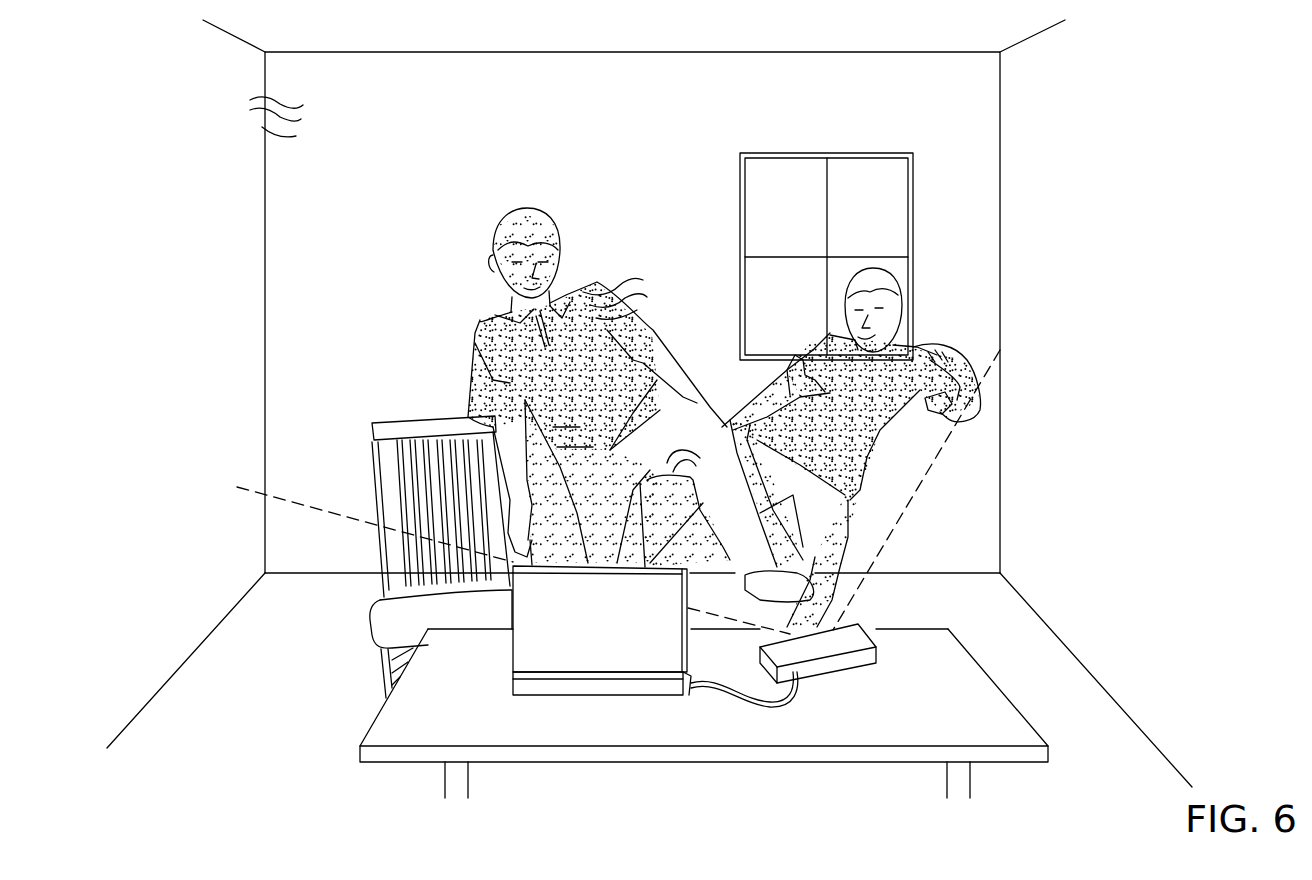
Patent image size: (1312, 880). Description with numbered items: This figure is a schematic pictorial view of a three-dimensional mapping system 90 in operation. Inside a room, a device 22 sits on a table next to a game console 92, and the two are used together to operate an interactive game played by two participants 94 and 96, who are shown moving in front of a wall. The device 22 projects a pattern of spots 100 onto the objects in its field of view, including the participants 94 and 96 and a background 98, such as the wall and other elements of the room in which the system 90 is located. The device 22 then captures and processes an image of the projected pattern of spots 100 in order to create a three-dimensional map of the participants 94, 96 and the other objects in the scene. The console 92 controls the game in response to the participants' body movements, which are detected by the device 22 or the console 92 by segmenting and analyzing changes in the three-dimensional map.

The device 22 is at (872, 638).
The 3D mapping system 90 is at (215, 218).
The game console 92 is at (513, 658).
The participant 94 is at (573, 288).
The participant 96 is at (918, 347).
The background 98 is at (378, 70).
The pattern of spots 100 is at (444, 206).